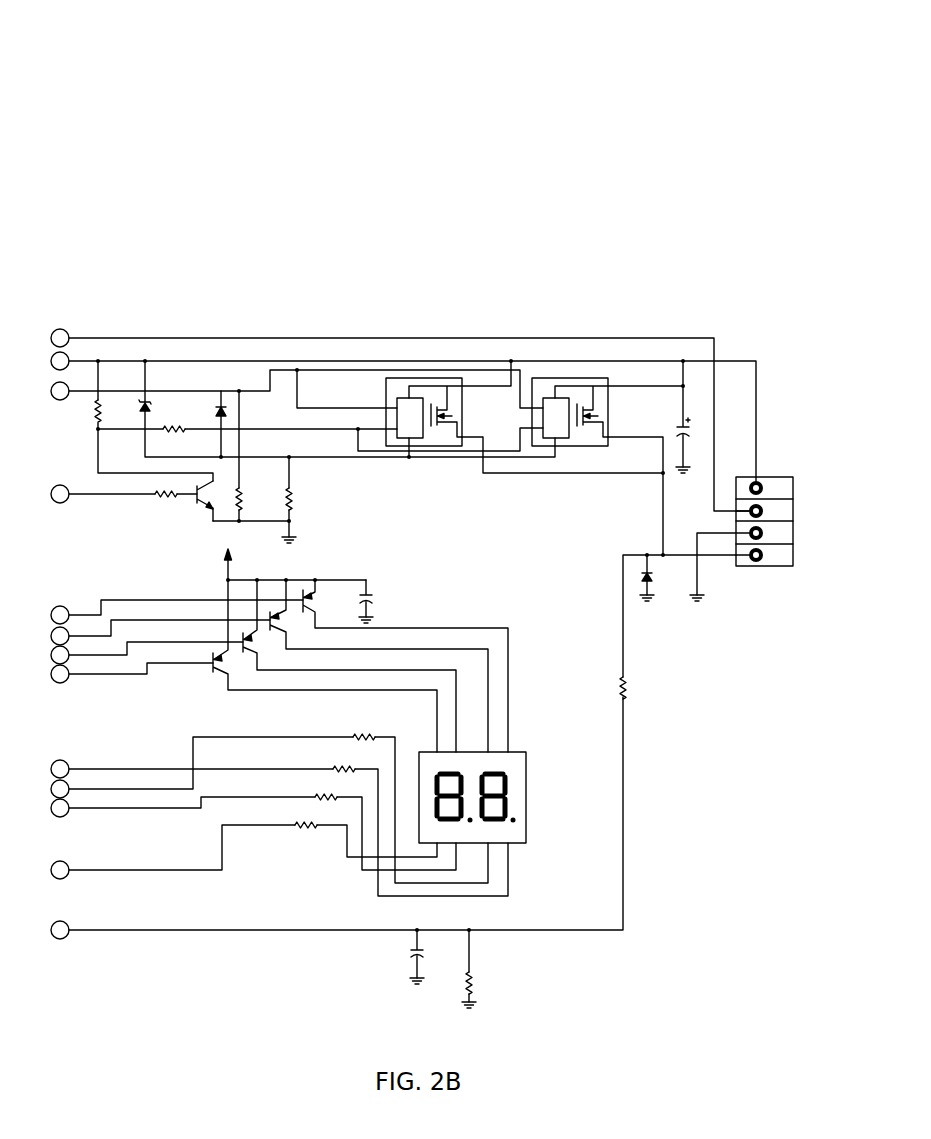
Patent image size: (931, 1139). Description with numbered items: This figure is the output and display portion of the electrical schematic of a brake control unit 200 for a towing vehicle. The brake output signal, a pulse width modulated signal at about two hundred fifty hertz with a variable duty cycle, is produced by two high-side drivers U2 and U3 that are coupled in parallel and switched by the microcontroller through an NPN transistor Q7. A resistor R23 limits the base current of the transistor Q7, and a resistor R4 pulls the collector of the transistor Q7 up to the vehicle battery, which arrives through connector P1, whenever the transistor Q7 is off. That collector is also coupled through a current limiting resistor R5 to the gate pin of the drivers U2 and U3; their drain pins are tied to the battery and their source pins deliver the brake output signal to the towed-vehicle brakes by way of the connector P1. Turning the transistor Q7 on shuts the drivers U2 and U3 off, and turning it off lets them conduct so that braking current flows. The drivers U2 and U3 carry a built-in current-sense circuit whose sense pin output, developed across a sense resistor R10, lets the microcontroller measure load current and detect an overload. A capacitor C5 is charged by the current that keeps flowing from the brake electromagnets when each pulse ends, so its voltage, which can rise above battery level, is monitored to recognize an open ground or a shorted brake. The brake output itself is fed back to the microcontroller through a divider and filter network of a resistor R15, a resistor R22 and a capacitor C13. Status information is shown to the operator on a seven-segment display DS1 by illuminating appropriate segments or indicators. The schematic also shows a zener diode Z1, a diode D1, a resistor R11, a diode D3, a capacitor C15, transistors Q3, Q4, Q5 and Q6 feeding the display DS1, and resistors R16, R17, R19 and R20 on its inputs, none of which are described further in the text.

The brake control unit 200 is at (645, 66).
The resistor R4 is at (85, 411).
The current limiting resistor R5 is at (174, 438).
The zener diode Z1 is at (136, 407).
The diode D1 is at (211, 412).
The sense resistor R10 is at (253, 498).
The resistor R11 is at (301, 515).
The resistor R23 is at (133, 505).
The NPN transistor Q7 is at (212, 501).
The high-side driver U2 is at (432, 403).
The high-side driver U3 is at (602, 408).
The capacitor C5 is at (692, 417).
The connector P1 is at (741, 528).
The resistor R15 is at (640, 688).
The diode D3 is at (658, 578).
The capacitor C13 is at (402, 957).
The resistor R22 is at (485, 969).
The capacitor C15 is at (380, 601).
The transistor Q3 is at (399, 666).
The transistor Q4 is at (375, 666).
The transistor Q5 is at (344, 666).
The transistor Q6 is at (320, 666).
The display DS1 is at (494, 800).
The resistor R16 is at (366, 729).
The resistor R17 is at (347, 760).
The resistor R19 is at (329, 788).
The resistor R20 is at (307, 816).